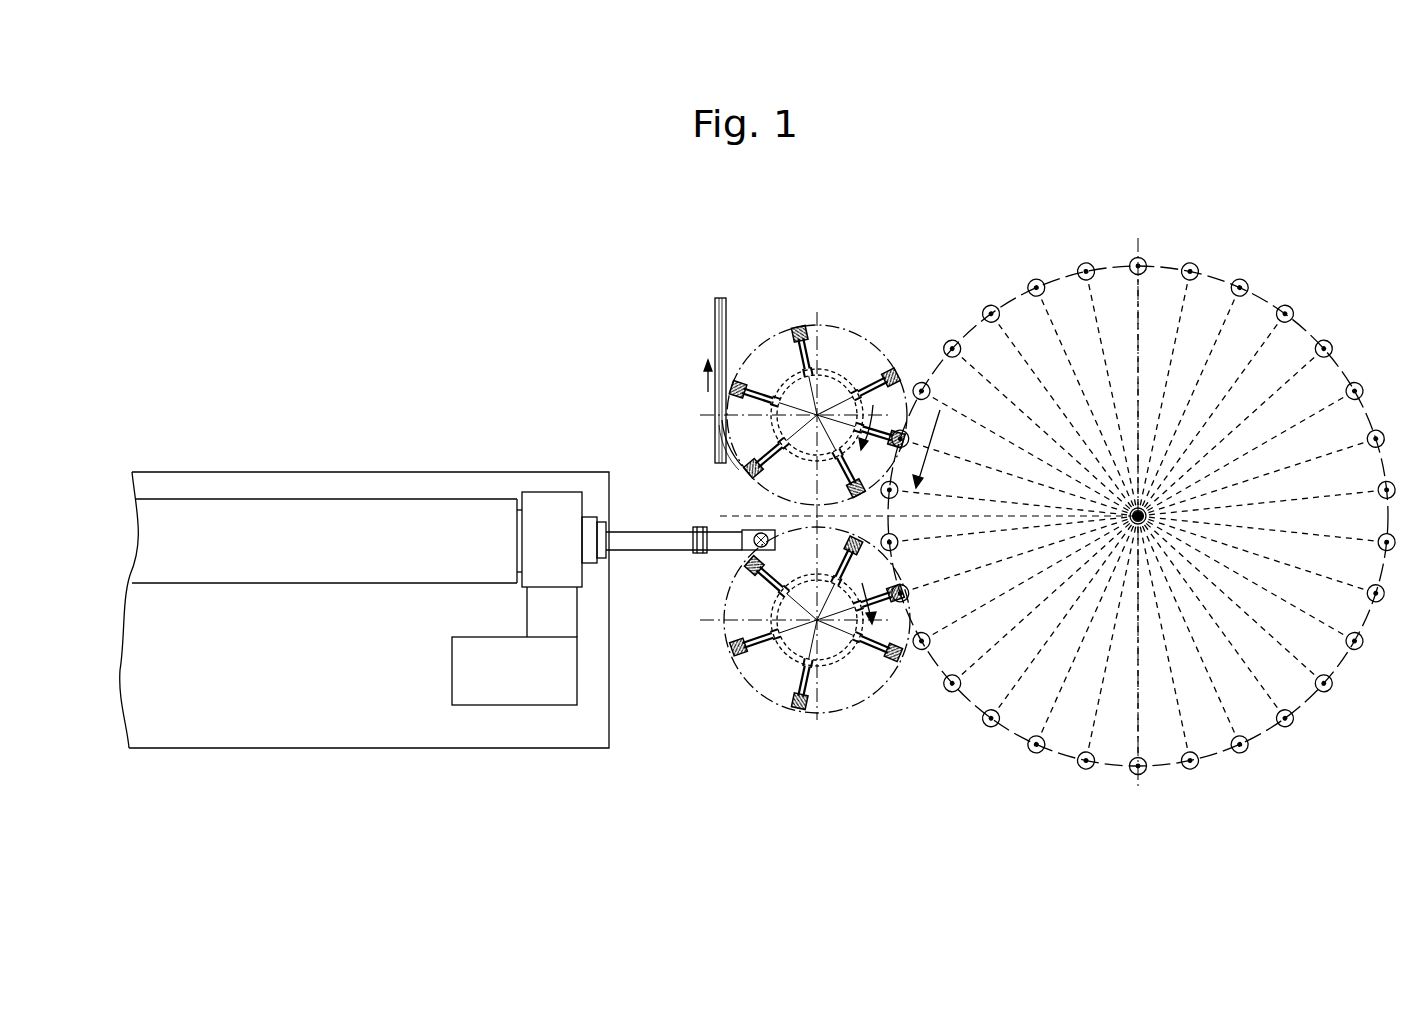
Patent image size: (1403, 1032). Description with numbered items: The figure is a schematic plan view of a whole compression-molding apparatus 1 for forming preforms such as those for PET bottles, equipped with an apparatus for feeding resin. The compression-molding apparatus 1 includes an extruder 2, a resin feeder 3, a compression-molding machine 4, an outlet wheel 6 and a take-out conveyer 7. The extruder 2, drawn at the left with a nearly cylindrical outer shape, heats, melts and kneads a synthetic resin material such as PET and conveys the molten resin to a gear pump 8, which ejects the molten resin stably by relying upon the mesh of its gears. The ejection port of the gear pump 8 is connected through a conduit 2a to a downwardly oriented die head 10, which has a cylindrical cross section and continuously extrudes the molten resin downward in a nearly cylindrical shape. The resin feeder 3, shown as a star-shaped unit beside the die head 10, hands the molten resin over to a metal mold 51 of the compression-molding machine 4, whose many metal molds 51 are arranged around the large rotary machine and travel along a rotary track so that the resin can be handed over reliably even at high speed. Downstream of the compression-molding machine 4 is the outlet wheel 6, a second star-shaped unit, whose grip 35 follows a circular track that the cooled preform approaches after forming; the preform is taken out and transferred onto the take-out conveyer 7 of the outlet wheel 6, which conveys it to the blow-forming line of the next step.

The compression-molding apparatus 1 is at (512, 343).
The extruder 2 is at (176, 487).
The conduit 2a is at (650, 540).
The resin feeder 3 is at (715, 706).
The compression-molding machine 4 is at (1160, 297).
The metal mold 51 is at (1032, 284).
The outlet wheel 6 is at (860, 345).
The take-out conveyer 7 is at (715, 315).
The gear pump 8 is at (552, 522).
The die head 10 is at (757, 537).
The grip 35 is at (792, 353).